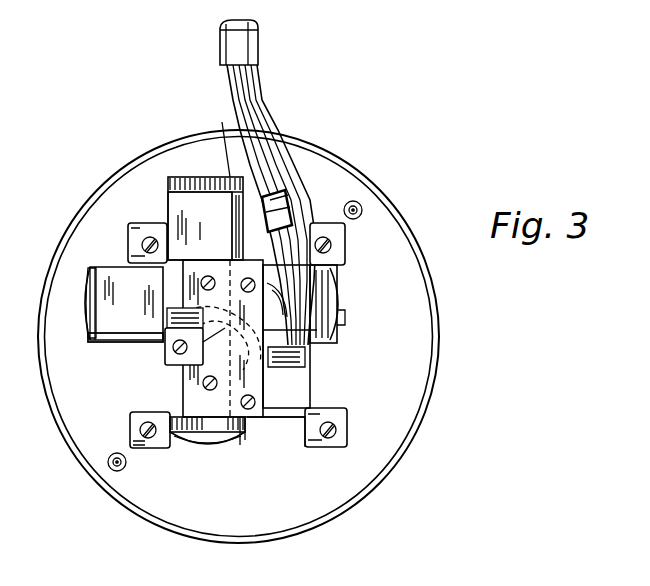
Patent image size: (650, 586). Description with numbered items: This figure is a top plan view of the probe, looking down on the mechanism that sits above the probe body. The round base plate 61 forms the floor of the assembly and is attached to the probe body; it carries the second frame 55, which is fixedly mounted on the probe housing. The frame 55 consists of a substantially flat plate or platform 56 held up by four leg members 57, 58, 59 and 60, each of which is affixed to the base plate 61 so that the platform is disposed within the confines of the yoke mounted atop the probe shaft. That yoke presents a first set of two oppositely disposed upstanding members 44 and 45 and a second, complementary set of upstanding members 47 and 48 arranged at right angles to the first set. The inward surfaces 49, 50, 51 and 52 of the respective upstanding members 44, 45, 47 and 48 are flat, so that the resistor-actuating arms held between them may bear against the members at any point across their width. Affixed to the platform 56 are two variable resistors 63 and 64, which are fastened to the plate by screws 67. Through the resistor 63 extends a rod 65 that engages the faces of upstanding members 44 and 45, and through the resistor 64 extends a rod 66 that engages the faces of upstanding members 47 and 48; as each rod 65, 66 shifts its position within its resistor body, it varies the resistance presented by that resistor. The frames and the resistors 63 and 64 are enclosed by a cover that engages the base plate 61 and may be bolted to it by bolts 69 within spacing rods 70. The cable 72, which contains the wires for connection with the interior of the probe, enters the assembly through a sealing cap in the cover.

The upstanding member 44 is at (82, 330).
The upstanding member 45 is at (335, 318).
The upstanding member 47 is at (197, 447).
The upstanding member 48 is at (215, 137).
The inward surface 49 is at (93, 292).
The inward surface 50 is at (323, 295).
The inward surface 51 is at (241, 436).
The inward surface 52 is at (213, 178).
The second frame 55 is at (327, 396).
The platform 56 is at (312, 376).
The leg member 57 is at (153, 222).
The leg member 58 is at (314, 222).
The leg member 59 is at (347, 428).
The leg member 60 is at (130, 417).
The base plate 61 is at (206, 515).
The variable resistor 63 is at (165, 357).
The variable resistor 64 is at (250, 418).
The rod 65 is at (115, 345).
The rod 66 is at (232, 214).
The screws 67 is at (203, 342).
The bolts 69 is at (108, 470).
The spacing rods 70 is at (362, 203).
The cable 72 is at (260, 52).